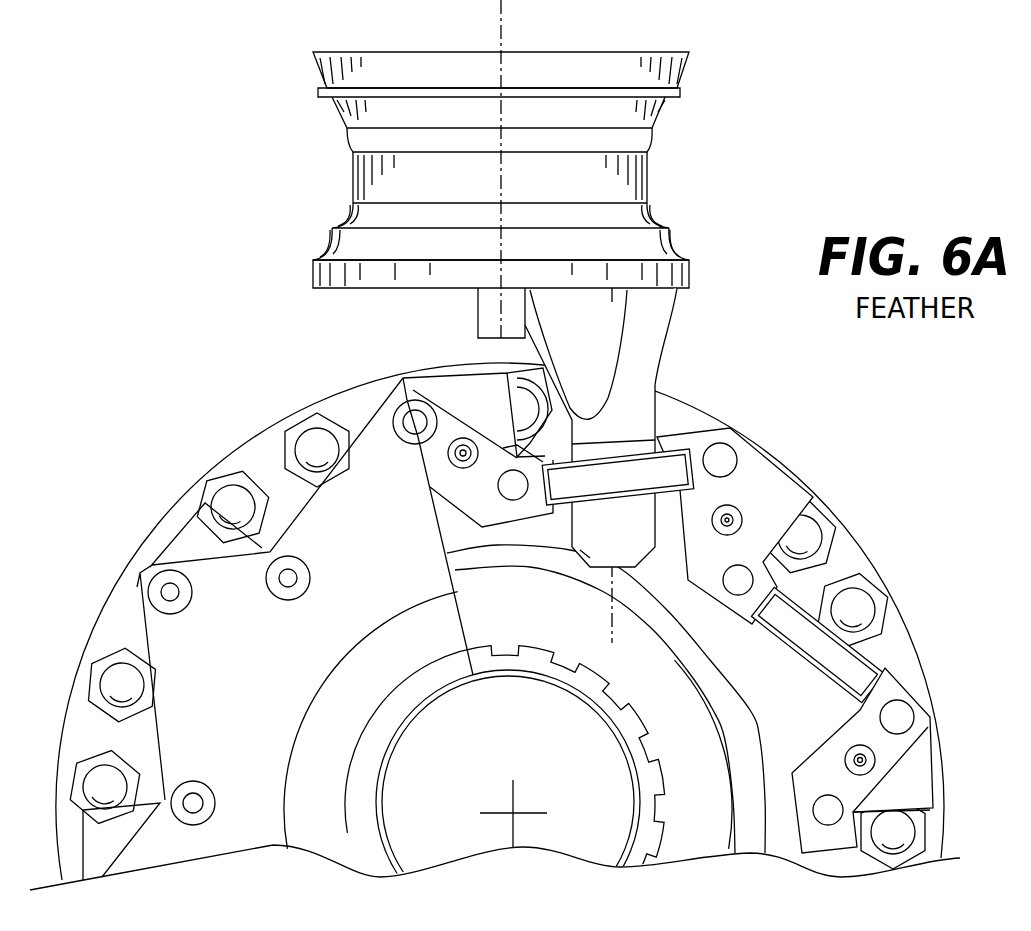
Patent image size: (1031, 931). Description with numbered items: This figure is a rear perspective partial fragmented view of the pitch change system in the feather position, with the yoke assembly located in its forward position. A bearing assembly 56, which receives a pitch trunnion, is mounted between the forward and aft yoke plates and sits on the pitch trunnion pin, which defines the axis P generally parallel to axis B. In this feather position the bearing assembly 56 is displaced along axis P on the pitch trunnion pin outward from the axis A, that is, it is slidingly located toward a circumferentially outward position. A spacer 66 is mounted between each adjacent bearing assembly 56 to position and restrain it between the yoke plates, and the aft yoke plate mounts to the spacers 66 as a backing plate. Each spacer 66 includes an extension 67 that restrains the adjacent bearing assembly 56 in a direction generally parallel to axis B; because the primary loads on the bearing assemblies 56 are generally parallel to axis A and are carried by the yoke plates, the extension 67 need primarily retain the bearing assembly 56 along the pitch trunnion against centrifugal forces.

The bearing assembly 56 is at (660, 470).
The spacer 66 is at (455, 430).
The extension 67 is at (503, 450).
The axis A is at (514, 814).
The axis B is at (500, 20).
The axis P is at (612, 617).